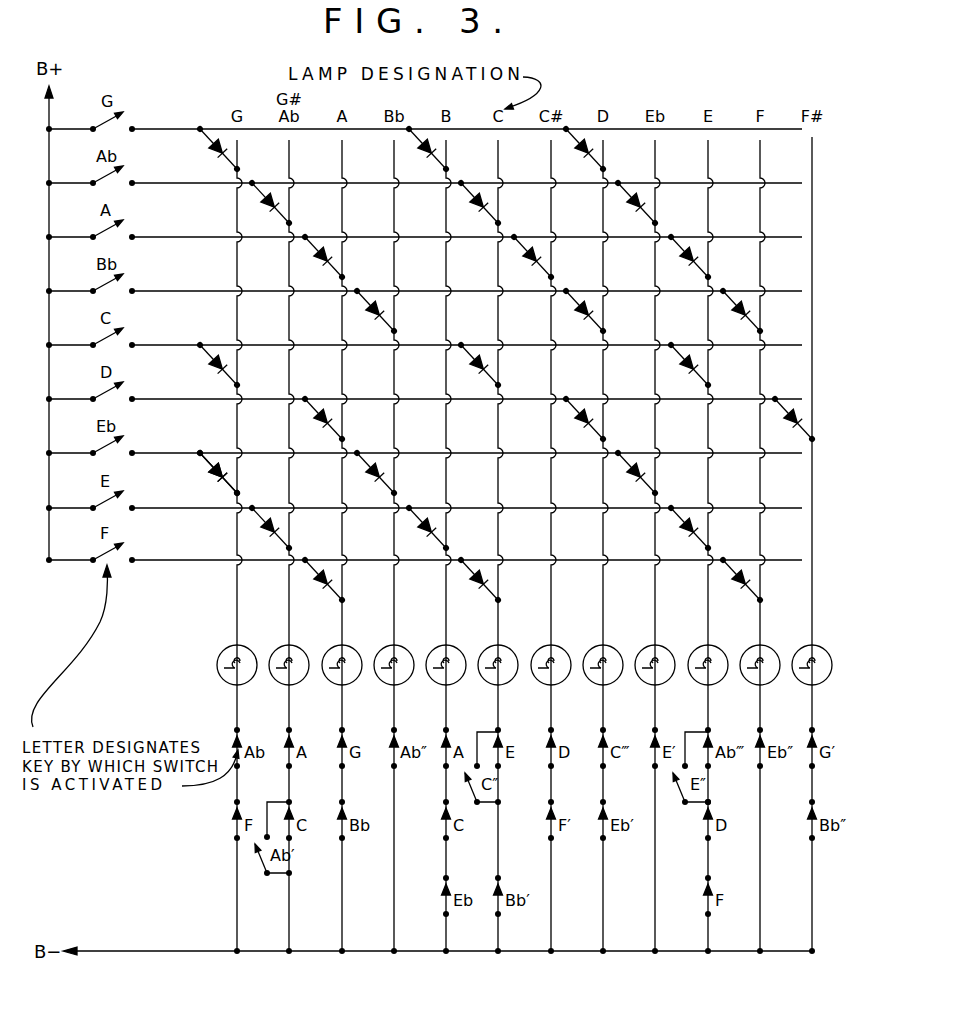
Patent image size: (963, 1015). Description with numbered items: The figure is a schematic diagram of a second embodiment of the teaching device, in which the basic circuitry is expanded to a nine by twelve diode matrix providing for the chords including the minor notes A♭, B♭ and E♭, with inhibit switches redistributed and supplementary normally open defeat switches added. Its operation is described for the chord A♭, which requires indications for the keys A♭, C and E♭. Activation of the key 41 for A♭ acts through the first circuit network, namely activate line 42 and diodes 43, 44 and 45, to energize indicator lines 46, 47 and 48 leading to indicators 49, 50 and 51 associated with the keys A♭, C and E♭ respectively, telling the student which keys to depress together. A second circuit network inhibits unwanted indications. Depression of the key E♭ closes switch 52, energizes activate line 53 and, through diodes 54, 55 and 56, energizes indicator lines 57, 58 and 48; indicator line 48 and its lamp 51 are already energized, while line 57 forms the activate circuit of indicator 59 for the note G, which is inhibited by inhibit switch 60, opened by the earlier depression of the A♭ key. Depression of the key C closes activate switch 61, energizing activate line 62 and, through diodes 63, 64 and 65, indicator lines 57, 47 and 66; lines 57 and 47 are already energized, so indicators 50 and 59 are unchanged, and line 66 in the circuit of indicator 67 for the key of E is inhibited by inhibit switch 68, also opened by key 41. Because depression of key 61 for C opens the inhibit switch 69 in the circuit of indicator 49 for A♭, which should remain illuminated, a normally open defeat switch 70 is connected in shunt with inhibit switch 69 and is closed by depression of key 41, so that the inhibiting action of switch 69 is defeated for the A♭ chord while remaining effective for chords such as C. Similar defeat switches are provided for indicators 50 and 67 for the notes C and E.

The key A♭ 41 is at (93, 178).
The activate line 42 is at (200, 182).
The diode 43 is at (269, 203).
The diode 44 is at (478, 203).
The diode 45 is at (632, 203).
The indicator line 46 is at (289, 263).
The indicator line 47 is at (498, 263).
The indicator line 48 is at (655, 263).
The indicator 49 is at (283, 648).
The indicator 50 is at (490, 648).
The indicator 51 is at (647, 648).
The switch 52 is at (93, 447).
The activate line 53 is at (178, 452).
The diode 54 is at (215, 476).
The diode 55 is at (380, 477).
The diode 56 is at (636, 477).
The indicator line 57 is at (237, 527).
The indicator line 58 is at (394, 527).
The indicator 59 is at (224, 651).
The inhibit switch 60 is at (241, 747).
The activate switch 61 is at (93, 339).
The activate line 62 is at (177, 344).
The diode 63 is at (215, 368).
The diode 64 is at (476, 368).
The diode 65 is at (686, 368).
The indicator line 66 is at (708, 417).
The indicator 67 is at (700, 648).
The inhibit switch 68 is at (712, 744).
The inhibit switch 69 is at (291, 808).
The defeat switch 70 is at (264, 866).